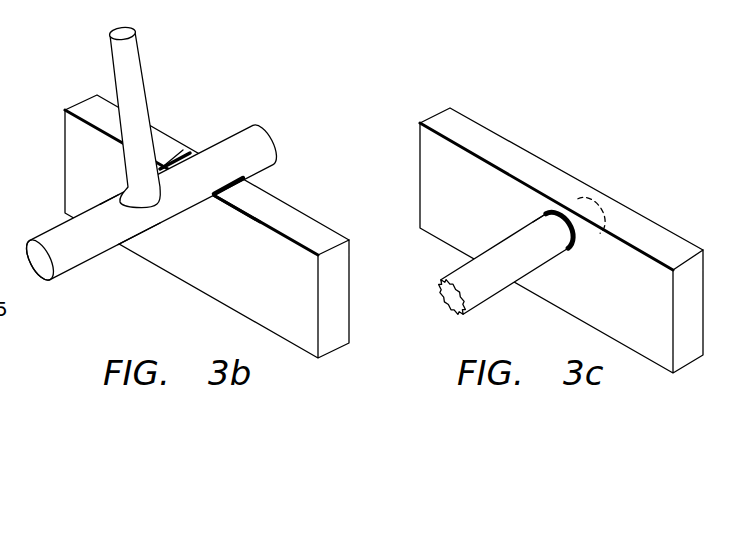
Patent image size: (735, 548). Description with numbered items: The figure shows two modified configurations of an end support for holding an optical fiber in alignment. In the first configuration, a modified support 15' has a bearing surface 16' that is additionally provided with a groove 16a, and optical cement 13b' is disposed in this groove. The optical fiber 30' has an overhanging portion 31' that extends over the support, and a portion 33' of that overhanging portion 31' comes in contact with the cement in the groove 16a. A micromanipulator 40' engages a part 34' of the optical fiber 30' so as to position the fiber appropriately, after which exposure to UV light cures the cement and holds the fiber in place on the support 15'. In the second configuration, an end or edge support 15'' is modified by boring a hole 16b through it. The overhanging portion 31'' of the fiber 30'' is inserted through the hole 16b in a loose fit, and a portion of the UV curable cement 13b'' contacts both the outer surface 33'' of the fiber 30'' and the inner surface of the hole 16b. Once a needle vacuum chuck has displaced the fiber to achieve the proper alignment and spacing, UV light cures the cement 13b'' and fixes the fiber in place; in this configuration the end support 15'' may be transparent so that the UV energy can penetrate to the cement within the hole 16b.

In FIG. 3B, the modified support 15' is at (237, 234).
In FIG. 3B, the bearing surface 16' is at (212, 175).
In FIG. 3B, the groove 16a is at (214, 195).
In FIG. 3B, the optical fiber 30' is at (148, 218).
In FIG. 3B, the overhanging portion 31' is at (127, 277).
In FIG. 3B, the portion of overhanging portion 33' is at (194, 138).
In FIG. 3B, the part of optical fiber 34' is at (65, 190).
In FIG. 3B, the micromanipulator 40' is at (154, 117).
In FIG. 3B, the optical cement 13b' is at (210, 257).
In FIG. 3C, the end or edge support 15'' is at (561, 248).
In FIG. 3C, the hole 16b is at (533, 220).
In FIG. 3C, the fiber 30'' is at (471, 263).
In FIG. 3C, the overhanging portion 31'' is at (548, 157).
In FIG. 3C, the outer surface 33'' is at (447, 171).
In FIG. 3C, the UV curable cement 13b'' is at (584, 169).